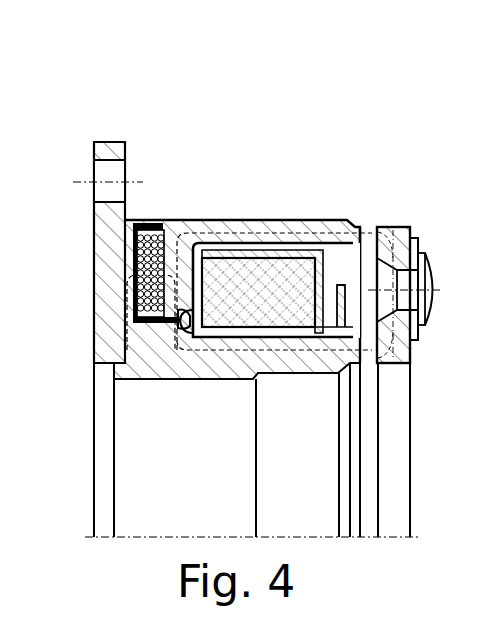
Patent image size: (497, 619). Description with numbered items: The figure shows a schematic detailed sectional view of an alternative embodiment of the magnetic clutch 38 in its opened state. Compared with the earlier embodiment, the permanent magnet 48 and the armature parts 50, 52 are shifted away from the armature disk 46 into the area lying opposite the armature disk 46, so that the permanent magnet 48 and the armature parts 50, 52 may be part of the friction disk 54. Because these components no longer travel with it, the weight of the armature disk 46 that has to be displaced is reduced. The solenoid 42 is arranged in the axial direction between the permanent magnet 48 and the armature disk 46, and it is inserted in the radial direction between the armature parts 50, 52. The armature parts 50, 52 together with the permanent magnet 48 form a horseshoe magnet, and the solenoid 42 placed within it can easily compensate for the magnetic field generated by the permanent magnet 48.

The magnetic clutch 38 is at (100, 128).
The solenoid 42 is at (220, 290).
The armature disk 46 is at (398, 245).
The permanent magnet 48 is at (150, 252).
The armature part 50 is at (307, 230).
The armature part 52 is at (130, 368).
The friction disk 54 is at (358, 359).